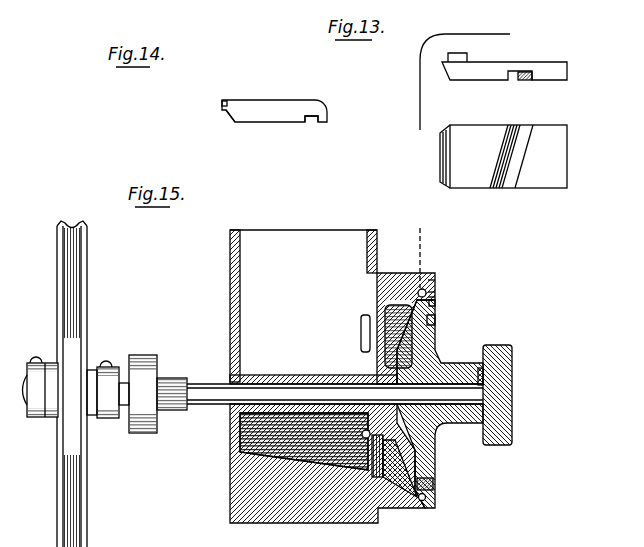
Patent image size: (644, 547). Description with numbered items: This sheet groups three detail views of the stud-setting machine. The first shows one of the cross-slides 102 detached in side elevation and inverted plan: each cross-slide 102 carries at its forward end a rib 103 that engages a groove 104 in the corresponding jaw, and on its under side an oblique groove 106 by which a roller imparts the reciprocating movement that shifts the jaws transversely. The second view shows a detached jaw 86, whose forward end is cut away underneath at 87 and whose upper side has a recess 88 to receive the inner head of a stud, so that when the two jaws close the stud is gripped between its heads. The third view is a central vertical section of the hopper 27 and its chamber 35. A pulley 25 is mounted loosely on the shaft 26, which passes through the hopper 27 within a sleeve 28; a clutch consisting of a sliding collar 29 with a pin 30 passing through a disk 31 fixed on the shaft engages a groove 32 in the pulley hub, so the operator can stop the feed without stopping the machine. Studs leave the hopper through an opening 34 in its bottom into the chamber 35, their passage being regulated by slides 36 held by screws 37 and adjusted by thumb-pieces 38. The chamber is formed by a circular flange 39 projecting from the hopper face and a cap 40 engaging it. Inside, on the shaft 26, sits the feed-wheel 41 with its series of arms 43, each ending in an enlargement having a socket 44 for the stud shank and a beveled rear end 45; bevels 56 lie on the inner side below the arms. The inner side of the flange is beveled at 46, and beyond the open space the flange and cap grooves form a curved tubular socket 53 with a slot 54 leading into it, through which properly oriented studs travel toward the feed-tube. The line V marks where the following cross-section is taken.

In FIG. 13, the cross-slide 102 is at (538, 62).
In FIG. 13, the rib 103 is at (464, 53).
In FIG. 13, the oblique groove 106 is at (520, 80).
In FIG. 14, the jaw 86 is at (286, 100).
In FIG. 14, the cut-away portion 87 is at (226, 112).
In FIG. 14, the recess 88 is at (222, 100).
In FIG. 14, the groove 104 is at (312, 123).
In FIG. 15, the pulley 25 is at (86, 250).
In FIG. 15, the shaft 26 is at (210, 384).
In FIG. 15, the hopper 27 is at (303, 306).
In FIG. 15, the sleeve 28 is at (302, 375).
In FIG. 15, the sliding collar 29 is at (141, 433).
In FIG. 15, the pin 30 is at (125, 356).
In FIG. 15, the disk 31 is at (107, 418).
In FIG. 15, the groove 32 is at (88, 392).
In FIG. 15, the opening 34 is at (383, 456).
In FIG. 15, the chamber 35 is at (390, 483).
In FIG. 15, the slide 36 is at (368, 440).
In FIG. 15, the screw 37 is at (362, 433).
In FIG. 15, the thumb-piece 38 is at (361, 337).
In FIG. 15, the circular flange 39 is at (406, 288).
In FIG. 15, the cap 40 is at (433, 283).
In FIG. 15, the feed-wheel 41 is at (441, 361).
In FIG. 15, the arm 43 is at (435, 490).
In FIG. 15, the socket 44 is at (433, 497).
In FIG. 15, the bevel 45 is at (435, 294).
In FIG. 15, the beveled portion 46 is at (394, 510).
In FIG. 15, the curved tubular socket 53 is at (425, 289).
In FIG. 15, the slot 54 is at (435, 298).
In FIG. 15, the bevel 56 is at (435, 320).
In FIG. 15, the section line V is at (420, 250).